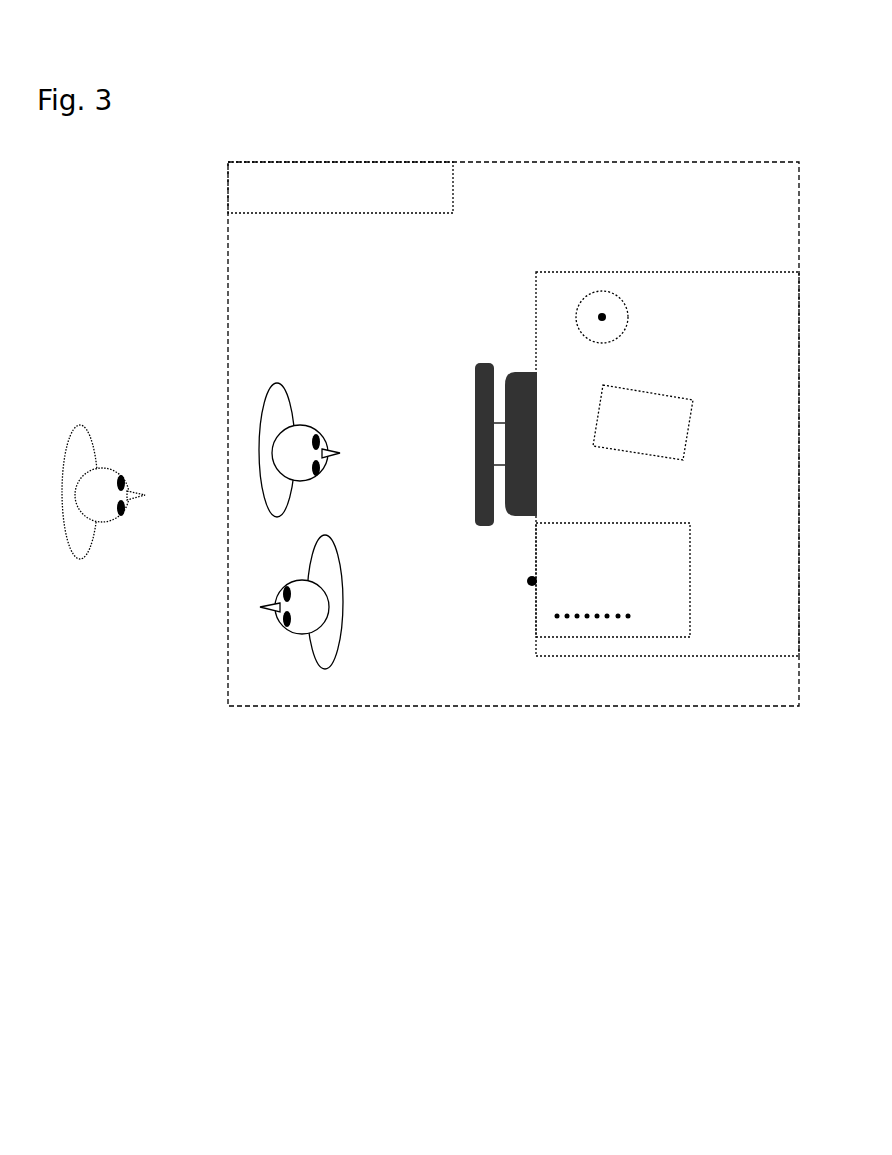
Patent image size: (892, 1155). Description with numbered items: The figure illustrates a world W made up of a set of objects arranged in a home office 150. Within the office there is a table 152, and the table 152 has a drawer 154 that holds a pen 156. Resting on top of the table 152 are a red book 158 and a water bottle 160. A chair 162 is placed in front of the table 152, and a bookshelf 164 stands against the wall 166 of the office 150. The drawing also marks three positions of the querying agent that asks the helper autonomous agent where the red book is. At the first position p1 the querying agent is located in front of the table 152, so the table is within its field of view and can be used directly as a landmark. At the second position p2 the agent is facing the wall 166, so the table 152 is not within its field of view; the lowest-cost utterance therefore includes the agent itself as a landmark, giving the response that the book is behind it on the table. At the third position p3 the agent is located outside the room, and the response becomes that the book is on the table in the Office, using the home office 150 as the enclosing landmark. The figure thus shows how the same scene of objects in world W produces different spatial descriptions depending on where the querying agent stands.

The home office 150 is at (690, 695).
The table 152 is at (598, 657).
The drawer 154 is at (561, 641).
The pen 156 is at (611, 621).
The red book 158 is at (607, 422).
The water bottle 160 is at (621, 286).
The chair 162 is at (475, 383).
The bookshelf 164 is at (265, 196).
The wall 166 is at (580, 165).
The position of querying agent in front of table p1 is at (262, 407).
The position of querying agent facing the wall p2 is at (266, 643).
The position of querying agent outside the room p3 is at (62, 574).
The world W is at (219, 887).